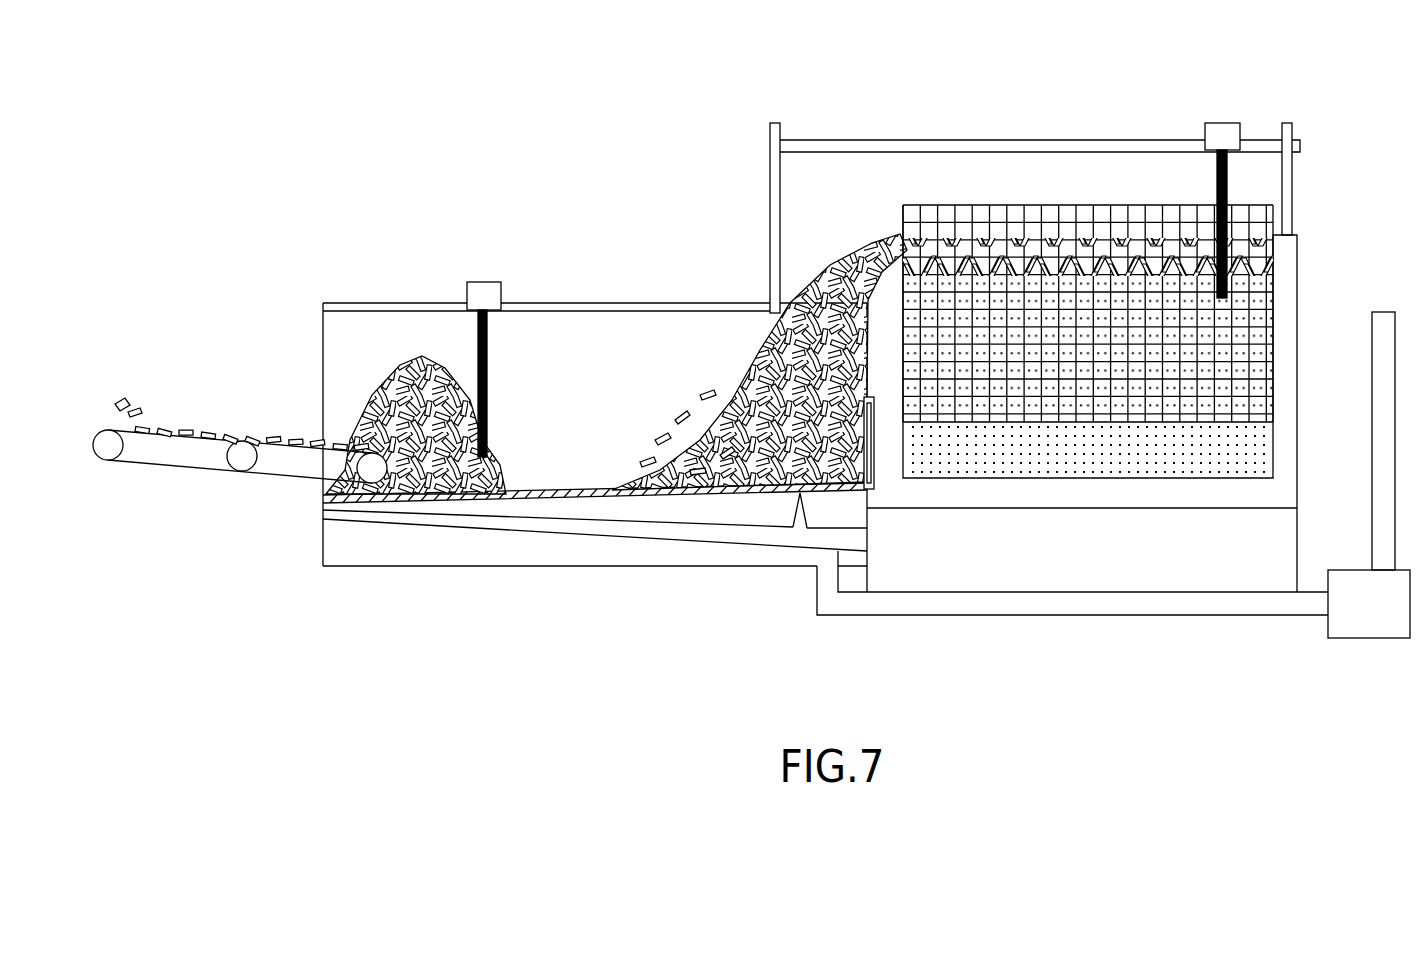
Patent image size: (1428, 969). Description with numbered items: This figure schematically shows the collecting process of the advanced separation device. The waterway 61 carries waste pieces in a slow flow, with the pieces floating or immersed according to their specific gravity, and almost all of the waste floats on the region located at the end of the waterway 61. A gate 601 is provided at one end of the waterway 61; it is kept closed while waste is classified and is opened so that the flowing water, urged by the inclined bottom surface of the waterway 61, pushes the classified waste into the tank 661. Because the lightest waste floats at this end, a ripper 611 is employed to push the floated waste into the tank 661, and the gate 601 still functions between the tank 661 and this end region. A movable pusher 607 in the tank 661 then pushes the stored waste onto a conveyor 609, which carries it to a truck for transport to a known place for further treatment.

The waterway 61 is at (1287, 277).
The gate 601 is at (862, 483).
The movable pusher 607 is at (488, 363).
The conveyor 609 is at (270, 465).
The ripper 611 is at (1217, 182).
The tank 661 is at (324, 350).